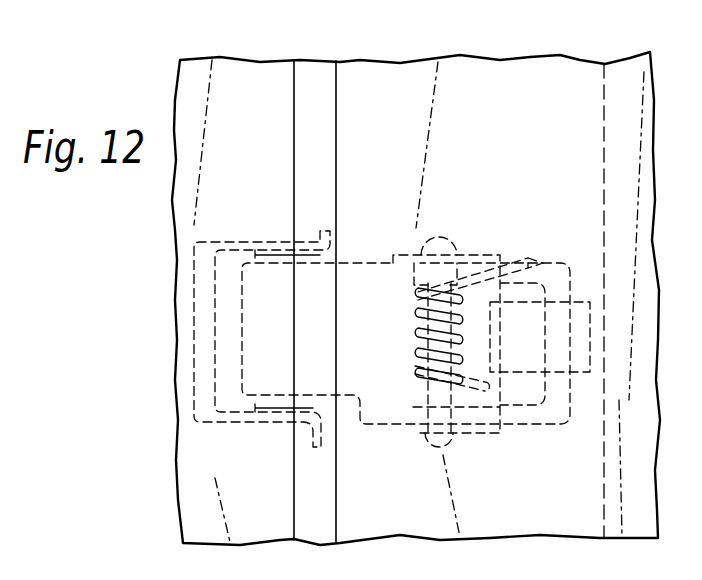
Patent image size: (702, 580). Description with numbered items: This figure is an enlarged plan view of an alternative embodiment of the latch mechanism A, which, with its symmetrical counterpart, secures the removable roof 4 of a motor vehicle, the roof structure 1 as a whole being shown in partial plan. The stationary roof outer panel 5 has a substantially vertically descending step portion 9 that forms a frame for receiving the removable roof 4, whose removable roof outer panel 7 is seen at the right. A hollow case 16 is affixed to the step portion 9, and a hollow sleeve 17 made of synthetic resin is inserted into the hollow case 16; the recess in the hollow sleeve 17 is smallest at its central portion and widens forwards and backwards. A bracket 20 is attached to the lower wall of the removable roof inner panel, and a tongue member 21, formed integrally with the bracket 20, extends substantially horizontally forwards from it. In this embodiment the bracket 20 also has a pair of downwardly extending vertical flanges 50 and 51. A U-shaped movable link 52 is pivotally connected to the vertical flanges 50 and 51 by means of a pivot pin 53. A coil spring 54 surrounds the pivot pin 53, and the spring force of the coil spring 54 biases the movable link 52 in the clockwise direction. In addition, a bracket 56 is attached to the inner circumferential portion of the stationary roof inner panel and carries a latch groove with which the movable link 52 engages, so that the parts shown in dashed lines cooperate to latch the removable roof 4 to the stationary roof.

The latch device 1 is at (262, 98).
The removable roof 4 is at (502, 79).
The stationary roof outer panel 5 is at (274, 92).
The removable roof outer panel 7 is at (572, 73).
The step portion 9 is at (294, 98).
The hollow case 16 is at (208, 418).
The hollow sleeve 17 is at (250, 416).
The bracket 20 is at (369, 280).
The tongue member 21 is at (247, 247).
The vertical flange 50 is at (480, 254).
The vertical flange 51 is at (480, 436).
The U-shaped movable link 52 is at (567, 414).
The pivot pin 53 is at (430, 394).
The coil spring 54 is at (417, 328).
The bracket 56 is at (585, 326).
The latch mechanism A is at (548, 444).